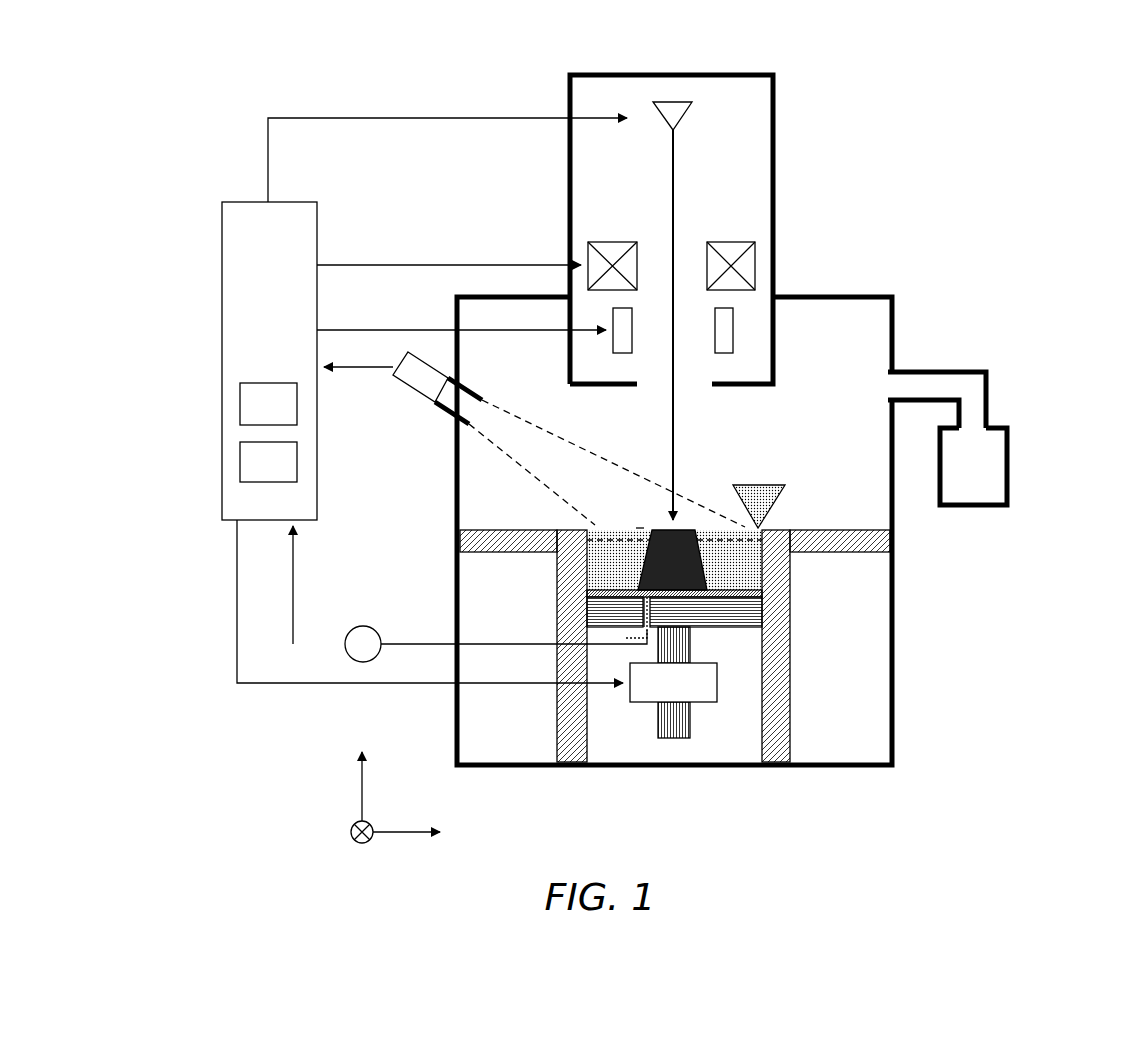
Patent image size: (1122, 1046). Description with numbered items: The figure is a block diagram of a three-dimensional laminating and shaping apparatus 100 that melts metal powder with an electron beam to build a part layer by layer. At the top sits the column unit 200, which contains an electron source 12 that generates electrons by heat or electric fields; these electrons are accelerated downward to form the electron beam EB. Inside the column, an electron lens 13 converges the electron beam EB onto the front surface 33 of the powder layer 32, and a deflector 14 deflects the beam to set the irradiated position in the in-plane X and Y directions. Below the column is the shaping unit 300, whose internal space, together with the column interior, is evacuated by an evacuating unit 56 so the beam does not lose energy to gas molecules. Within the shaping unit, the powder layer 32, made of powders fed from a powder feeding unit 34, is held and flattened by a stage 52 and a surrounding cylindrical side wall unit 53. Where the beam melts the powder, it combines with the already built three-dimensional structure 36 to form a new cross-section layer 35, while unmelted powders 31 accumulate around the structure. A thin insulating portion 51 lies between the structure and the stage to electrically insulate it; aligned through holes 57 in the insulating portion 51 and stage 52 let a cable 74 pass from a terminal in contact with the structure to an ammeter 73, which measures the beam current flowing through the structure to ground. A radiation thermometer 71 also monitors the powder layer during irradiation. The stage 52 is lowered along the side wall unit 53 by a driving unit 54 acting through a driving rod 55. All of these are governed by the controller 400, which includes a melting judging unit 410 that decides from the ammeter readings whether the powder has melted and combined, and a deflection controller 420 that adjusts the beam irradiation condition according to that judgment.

The three-dimensional laminating and shaping apparatus 100 is at (592, 850).
The column unit 200 is at (730, 63).
The electron source 12 is at (688, 113).
The electron beam EB is at (686, 190).
The electron lens 13 is at (740, 243).
The deflector 14 is at (733, 327).
The shaping unit 300 is at (902, 304).
The evacuating unit 56 is at (1007, 462).
The controller 400 is at (217, 300).
The melting judging unit 410 is at (240, 408).
The deflection controller 420 is at (240, 463).
The radiation thermometer 71 is at (394, 380).
The powders 31 is at (585, 548).
The powder layer 32 is at (613, 533).
The front surface 33 is at (640, 524).
The powder feeding unit 34 is at (756, 485).
The cross-section layer 35 is at (702, 555).
The three-dimensional structure 36 is at (712, 578).
The insulating portion 51 is at (745, 598).
The stage 52 is at (723, 622).
The side wall unit 53 is at (790, 662).
The driving unit 54 is at (706, 697).
The driving rod 55 is at (672, 732).
The through holes 57 is at (636, 609).
The ammeter 73 is at (362, 626).
The cable 74 is at (618, 638).